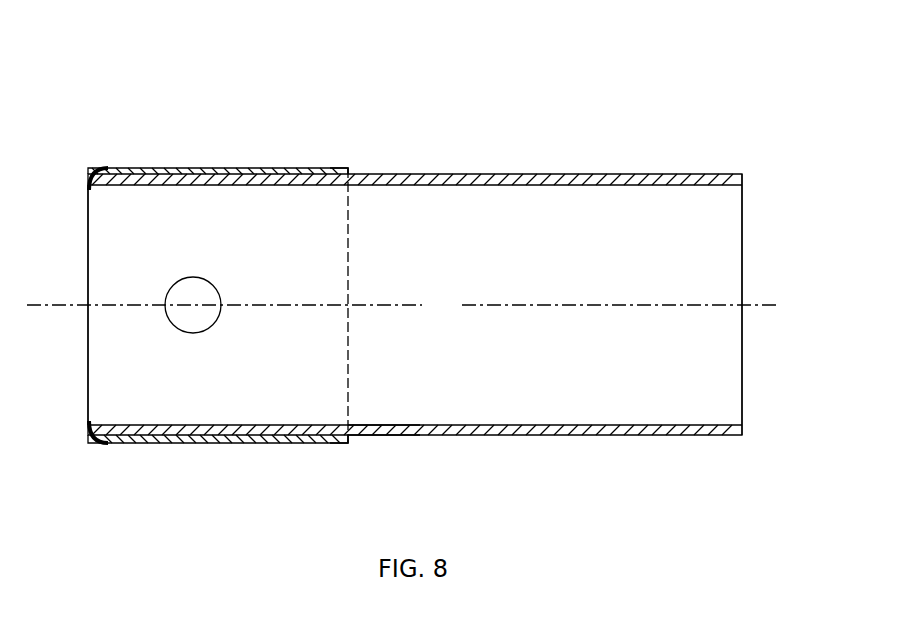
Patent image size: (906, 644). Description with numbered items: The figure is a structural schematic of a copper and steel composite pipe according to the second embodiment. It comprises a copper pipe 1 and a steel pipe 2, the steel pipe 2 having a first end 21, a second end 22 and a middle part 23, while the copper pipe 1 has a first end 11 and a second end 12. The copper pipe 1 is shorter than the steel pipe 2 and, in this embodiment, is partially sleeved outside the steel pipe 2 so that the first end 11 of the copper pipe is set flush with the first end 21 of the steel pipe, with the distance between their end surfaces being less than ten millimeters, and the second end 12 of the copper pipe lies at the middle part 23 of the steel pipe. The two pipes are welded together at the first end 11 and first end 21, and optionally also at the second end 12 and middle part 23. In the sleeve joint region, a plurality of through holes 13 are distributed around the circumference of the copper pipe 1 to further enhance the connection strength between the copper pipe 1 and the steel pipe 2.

The copper pipe 1 is at (207, 167).
The steel pipe 2 is at (494, 177).
The first end of the copper pipe 11 is at (110, 168).
The second end of the copper pipe 12 is at (335, 170).
The through holes 13 is at (192, 316).
The first end of the steel pipe 21 is at (102, 440).
The second end of the steel pipe 22 is at (722, 435).
The middle part of the steel pipe 23 is at (375, 435).